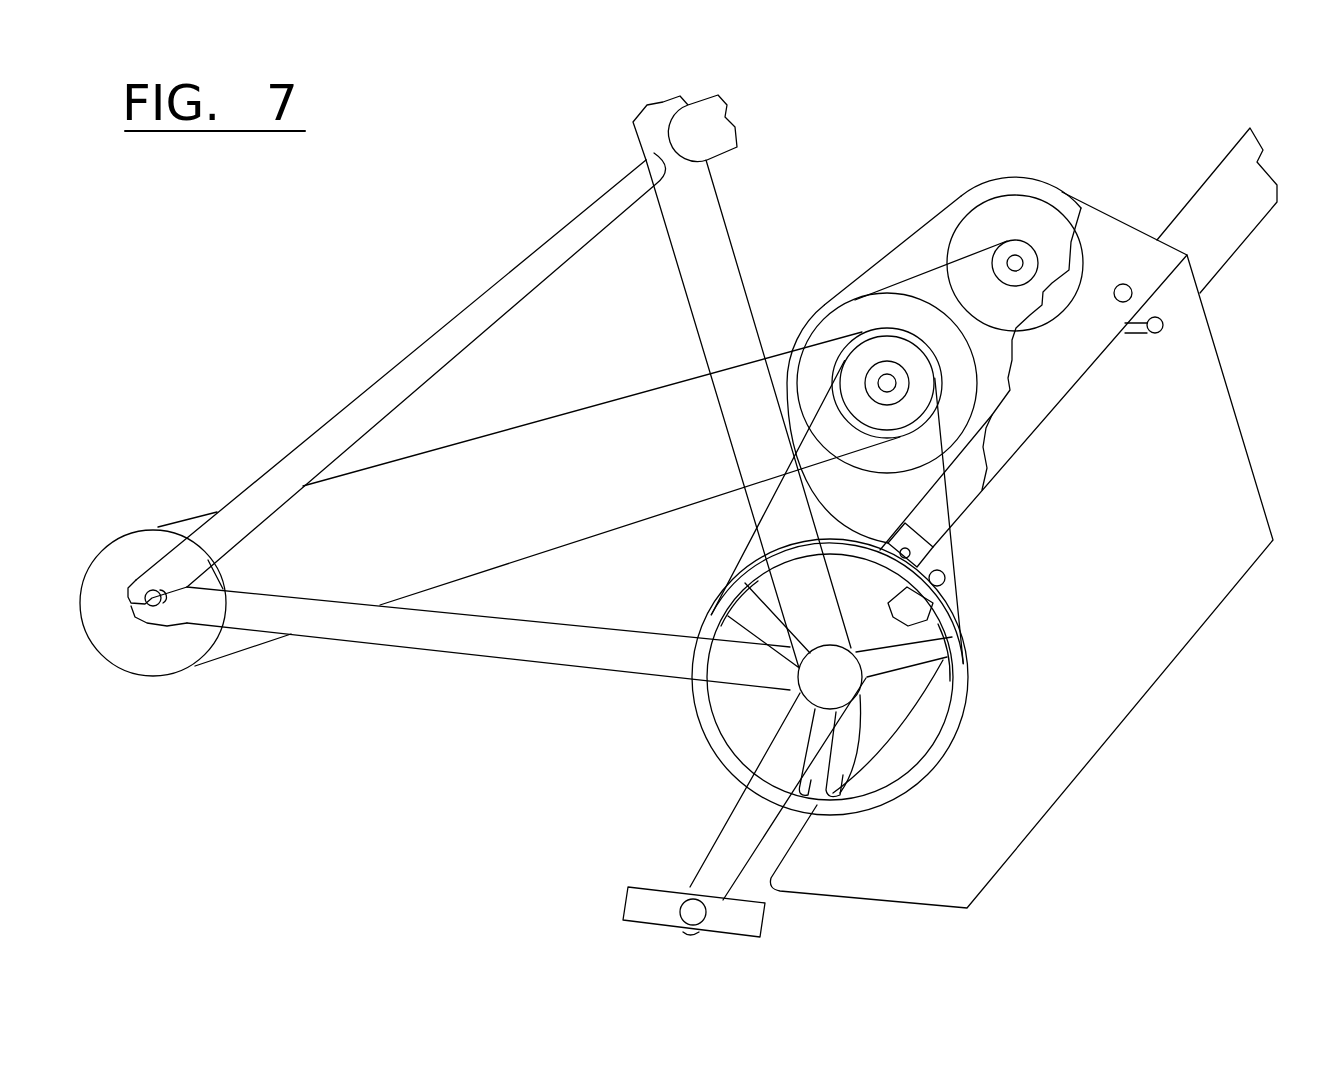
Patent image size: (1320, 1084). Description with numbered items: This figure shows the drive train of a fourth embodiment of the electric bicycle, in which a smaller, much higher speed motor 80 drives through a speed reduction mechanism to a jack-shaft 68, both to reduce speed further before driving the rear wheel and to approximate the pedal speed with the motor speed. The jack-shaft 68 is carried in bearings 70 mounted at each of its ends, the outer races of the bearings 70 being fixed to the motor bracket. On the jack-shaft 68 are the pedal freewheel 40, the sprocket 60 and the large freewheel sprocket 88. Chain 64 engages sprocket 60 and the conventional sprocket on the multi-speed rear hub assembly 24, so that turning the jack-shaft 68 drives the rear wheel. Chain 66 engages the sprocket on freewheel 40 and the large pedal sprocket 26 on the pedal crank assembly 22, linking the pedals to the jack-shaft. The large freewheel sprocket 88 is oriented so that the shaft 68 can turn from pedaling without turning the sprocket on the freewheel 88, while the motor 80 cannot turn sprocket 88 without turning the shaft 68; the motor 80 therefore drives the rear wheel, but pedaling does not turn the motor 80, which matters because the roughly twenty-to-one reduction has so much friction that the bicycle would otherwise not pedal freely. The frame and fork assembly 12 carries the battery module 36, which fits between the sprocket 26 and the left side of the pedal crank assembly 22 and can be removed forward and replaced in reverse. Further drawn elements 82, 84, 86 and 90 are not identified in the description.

The frame and fork assembly 12 is at (565, 227).
The pedal crank assembly 22 is at (718, 862).
The multi-speed rear hub assembly 24 is at (150, 652).
The pedal sprocket 26 is at (700, 717).
The battery module 36 is at (1143, 515).
The pedal freewheel 40 is at (893, 347).
The sprocket 60 is at (852, 345).
The chain 64 is at (578, 407).
The chain 66 is at (745, 551).
The jack-shaft 68 is at (884, 393).
The bearings 70 is at (901, 405).
The motor 80 is at (977, 217).
The shaft 82 is at (1014, 258).
The hub 84 is at (1013, 240).
The bracket 86 is at (1112, 253).
The large freewheel sprocket 88 is at (813, 377).
The belt 90 is at (933, 263).